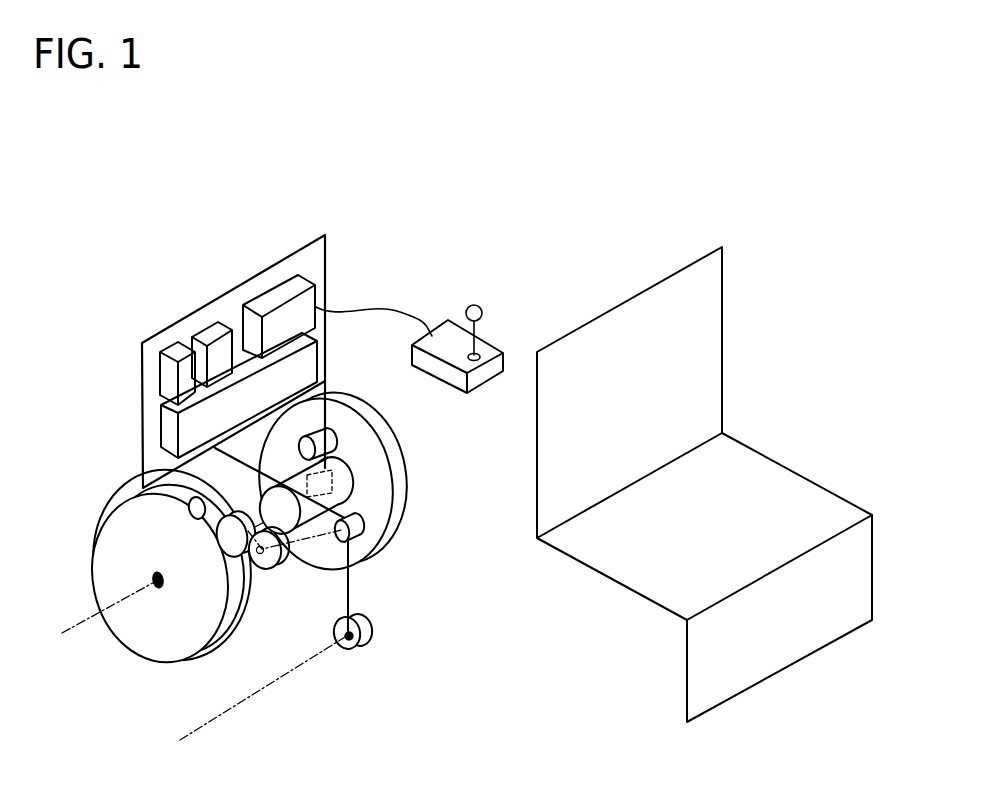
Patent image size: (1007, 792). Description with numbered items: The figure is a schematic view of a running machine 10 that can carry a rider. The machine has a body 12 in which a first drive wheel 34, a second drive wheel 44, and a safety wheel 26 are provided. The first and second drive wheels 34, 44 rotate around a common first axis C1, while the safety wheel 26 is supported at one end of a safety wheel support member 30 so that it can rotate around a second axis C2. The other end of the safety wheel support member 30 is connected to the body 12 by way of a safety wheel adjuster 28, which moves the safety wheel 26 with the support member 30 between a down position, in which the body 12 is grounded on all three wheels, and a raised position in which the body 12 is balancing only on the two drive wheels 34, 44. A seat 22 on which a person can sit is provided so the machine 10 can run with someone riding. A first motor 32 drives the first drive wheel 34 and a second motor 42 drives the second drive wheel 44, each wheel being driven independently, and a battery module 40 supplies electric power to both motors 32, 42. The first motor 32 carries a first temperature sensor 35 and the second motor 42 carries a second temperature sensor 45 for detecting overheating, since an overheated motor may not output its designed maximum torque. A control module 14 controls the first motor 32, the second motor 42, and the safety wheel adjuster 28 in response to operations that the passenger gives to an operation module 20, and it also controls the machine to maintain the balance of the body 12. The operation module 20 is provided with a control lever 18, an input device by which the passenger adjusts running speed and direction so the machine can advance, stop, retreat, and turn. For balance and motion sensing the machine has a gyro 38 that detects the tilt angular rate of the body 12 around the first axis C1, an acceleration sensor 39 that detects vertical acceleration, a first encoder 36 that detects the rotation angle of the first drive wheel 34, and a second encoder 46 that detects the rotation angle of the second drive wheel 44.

The running machine 10 is at (501, 140).
The body 12 is at (307, 246).
The control module 14 is at (277, 297).
The control lever 18 is at (474, 304).
The operation module 20 is at (498, 358).
The seat 22 is at (655, 284).
The safety wheel 26 is at (283, 562).
The safety wheel adjuster 28 is at (366, 531).
The safety wheel support member 30 is at (352, 588).
The first motor 32 is at (400, 510).
The first drive wheel 34 is at (403, 484).
The first temperature sensor 35 is at (336, 466).
The first encoder 36 is at (338, 436).
The gyro 38 is at (166, 377).
The acceleration sensor 39 is at (210, 337).
The battery module 40 is at (165, 430).
The second motor 42 is at (240, 566).
The second drive wheel 44 is at (102, 541).
The second temperature sensor 45 is at (224, 515).
The second encoder 46 is at (135, 474).
The first axis C1 is at (147, 585).
The second axis C2 is at (246, 698).